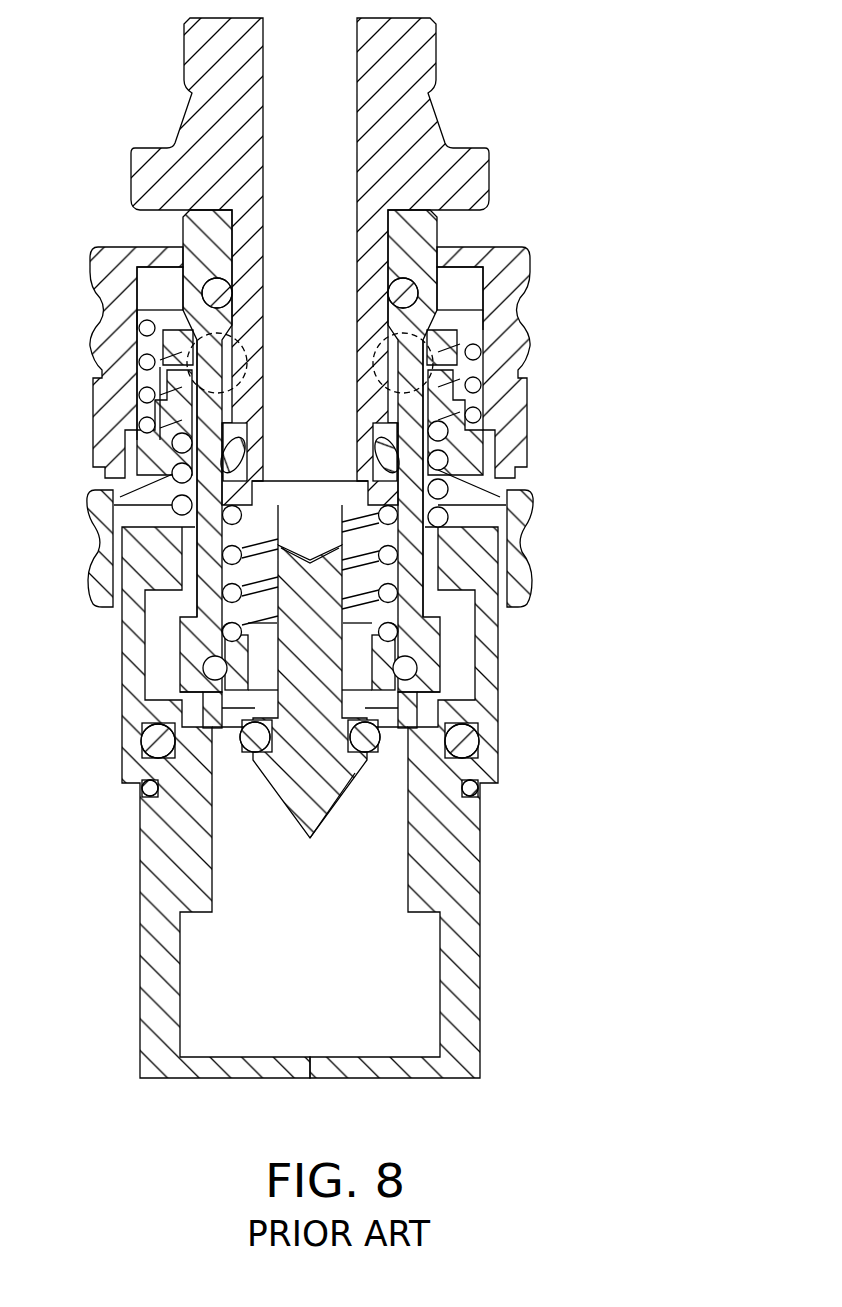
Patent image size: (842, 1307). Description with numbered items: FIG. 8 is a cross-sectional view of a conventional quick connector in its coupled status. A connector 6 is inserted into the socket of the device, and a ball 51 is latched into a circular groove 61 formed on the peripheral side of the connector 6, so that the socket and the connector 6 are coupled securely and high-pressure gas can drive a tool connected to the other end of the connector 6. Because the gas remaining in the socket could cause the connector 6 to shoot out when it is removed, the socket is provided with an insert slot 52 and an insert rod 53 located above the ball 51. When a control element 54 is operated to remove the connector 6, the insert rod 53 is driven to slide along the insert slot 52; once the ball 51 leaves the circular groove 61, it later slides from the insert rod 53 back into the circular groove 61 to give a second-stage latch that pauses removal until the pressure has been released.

The connector 6 is at (419, 116).
The ball 51 is at (197, 357).
The insert slot 52 is at (203, 300).
The insert rod 53 is at (208, 315).
The control element 54 is at (101, 335).
The circular groove 61 is at (213, 357).